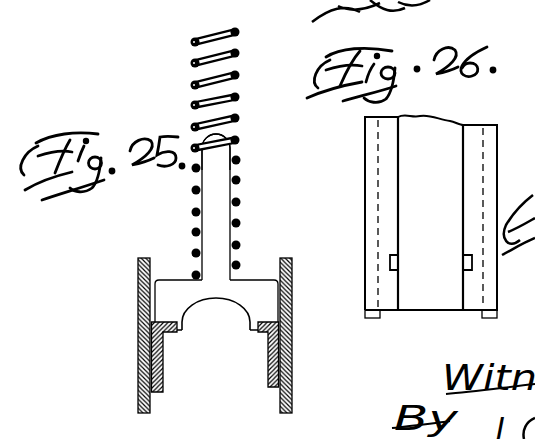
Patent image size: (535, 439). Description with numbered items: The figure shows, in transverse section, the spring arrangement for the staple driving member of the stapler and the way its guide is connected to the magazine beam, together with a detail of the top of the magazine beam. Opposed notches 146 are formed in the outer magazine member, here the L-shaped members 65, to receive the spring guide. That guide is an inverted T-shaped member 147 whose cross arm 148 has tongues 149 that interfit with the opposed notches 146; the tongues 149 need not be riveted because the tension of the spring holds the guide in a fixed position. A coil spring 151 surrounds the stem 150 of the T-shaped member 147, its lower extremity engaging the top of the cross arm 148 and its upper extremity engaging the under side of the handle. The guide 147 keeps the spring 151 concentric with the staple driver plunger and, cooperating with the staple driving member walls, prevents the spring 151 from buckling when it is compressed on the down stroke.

In FIG. 25, the L-shaped members 65 is at (157, 372).
In FIG. 25, the opposed notches 146 is at (183, 325).
In FIG. 26, the opposed notches 146 is at (465, 258).
In FIG. 25, the inverted T-shaped member 147 is at (215, 215).
In FIG. 25, the cross arm 148 is at (253, 280).
In FIG. 25, the tongues 149 is at (247, 318).
In FIG. 25, the stem 150 is at (217, 172).
In FIG. 25, the coil spring 151 is at (192, 63).